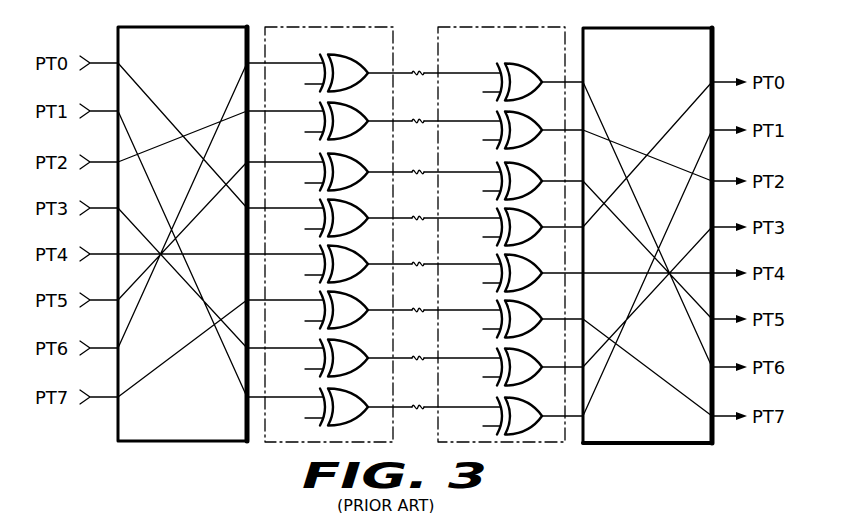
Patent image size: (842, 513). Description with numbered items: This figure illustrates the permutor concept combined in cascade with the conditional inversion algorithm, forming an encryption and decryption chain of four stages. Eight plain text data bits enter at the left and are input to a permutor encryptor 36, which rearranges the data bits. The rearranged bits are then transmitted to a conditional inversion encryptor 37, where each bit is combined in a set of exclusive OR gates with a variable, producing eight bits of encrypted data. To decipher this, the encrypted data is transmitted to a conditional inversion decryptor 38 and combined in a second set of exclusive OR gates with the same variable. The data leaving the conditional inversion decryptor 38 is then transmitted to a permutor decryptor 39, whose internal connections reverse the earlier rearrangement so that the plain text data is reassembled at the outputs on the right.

The permutor encryptor 36 is at (190, 28).
The conditional inversion encryptor 37 is at (345, 28).
The conditional inversion decryptor 38 is at (508, 29).
The permutor decryptor 39 is at (656, 27).